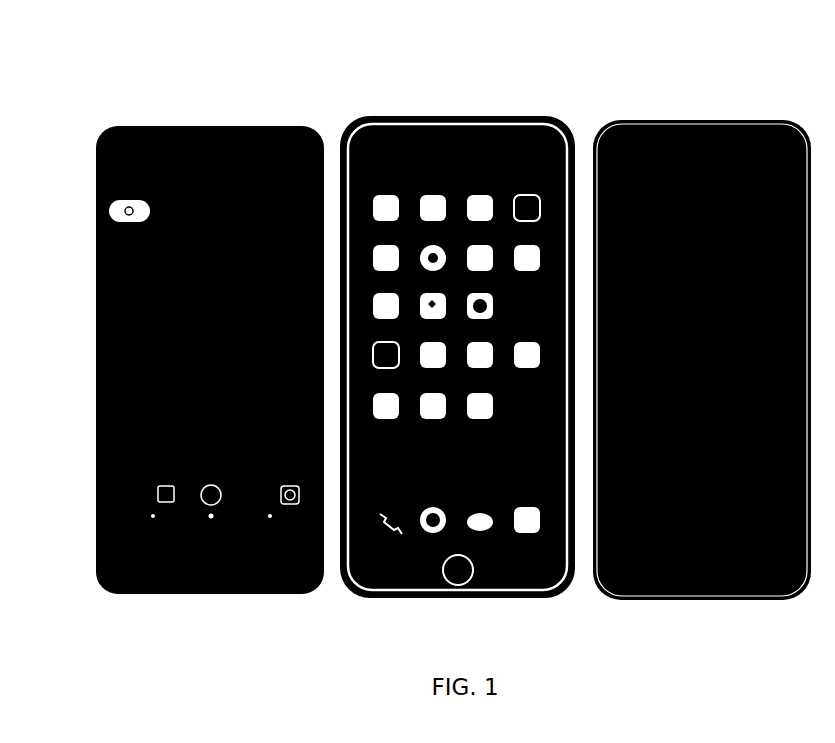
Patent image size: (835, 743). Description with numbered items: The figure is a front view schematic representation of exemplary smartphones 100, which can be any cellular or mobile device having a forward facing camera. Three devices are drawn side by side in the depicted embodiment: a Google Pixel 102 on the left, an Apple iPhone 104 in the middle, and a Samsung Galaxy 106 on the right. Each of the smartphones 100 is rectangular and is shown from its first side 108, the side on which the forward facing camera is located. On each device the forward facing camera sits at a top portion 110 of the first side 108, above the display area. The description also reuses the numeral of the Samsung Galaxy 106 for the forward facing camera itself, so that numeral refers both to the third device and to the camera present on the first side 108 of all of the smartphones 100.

The smartphones 100 is at (84, 48).
The Google Pixel 102 is at (195, 118).
The Apple iPhone 104 is at (392, 108).
The Samsung Galaxy 106 is at (642, 112).
The first side 108 is at (96, 313).
The top portion 110 is at (72, 156).